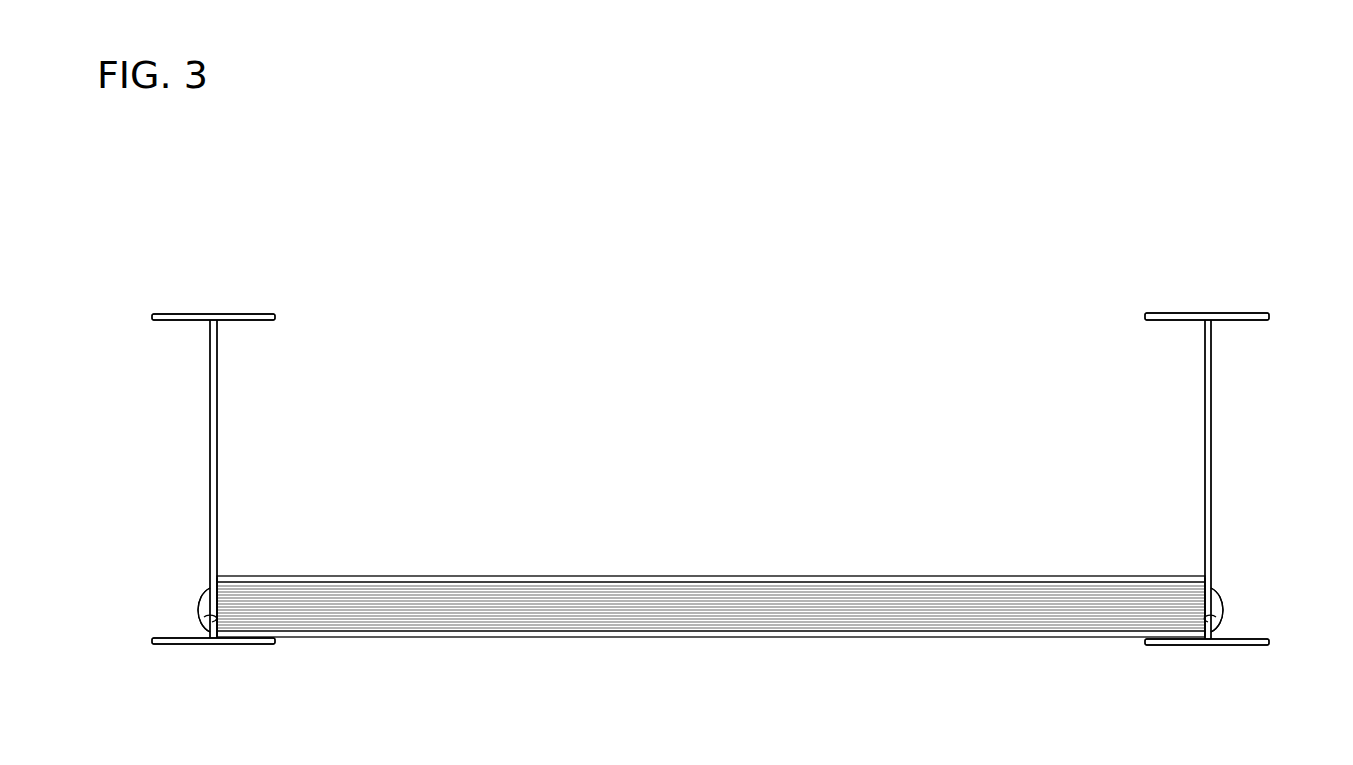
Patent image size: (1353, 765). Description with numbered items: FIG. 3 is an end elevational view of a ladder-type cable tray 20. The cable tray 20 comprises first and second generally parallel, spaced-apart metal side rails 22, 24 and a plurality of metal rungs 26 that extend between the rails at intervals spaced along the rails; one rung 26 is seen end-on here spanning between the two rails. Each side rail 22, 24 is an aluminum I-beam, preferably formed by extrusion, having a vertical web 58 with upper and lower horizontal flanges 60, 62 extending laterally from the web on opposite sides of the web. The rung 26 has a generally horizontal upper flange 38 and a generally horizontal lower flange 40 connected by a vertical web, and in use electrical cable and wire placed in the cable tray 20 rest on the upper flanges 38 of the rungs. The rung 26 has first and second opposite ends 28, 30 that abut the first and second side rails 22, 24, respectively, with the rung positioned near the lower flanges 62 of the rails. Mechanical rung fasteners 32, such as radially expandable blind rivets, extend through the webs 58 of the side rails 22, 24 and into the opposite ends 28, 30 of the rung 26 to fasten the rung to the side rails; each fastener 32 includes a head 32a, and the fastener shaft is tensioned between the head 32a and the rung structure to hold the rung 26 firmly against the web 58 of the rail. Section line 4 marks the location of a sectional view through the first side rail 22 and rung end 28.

The cable tray 20 is at (990, 250).
The first side rail 22 is at (148, 400).
The second side rail 24 is at (1275, 400).
The rung 26 is at (711, 599).
The first end of rung 28 is at (225, 642).
The second end of rung 30 is at (1209, 613).
The mechanical rung fastener 32 is at (188, 607).
The head 32a is at (208, 586).
The upper flange 38 is at (716, 576).
The lower flange 40 is at (704, 641).
The web 58 is at (218, 393).
The upper flange 60 is at (195, 313).
The lower flange 62 is at (196, 645).
The section line 4- 4 is at (240, 490).